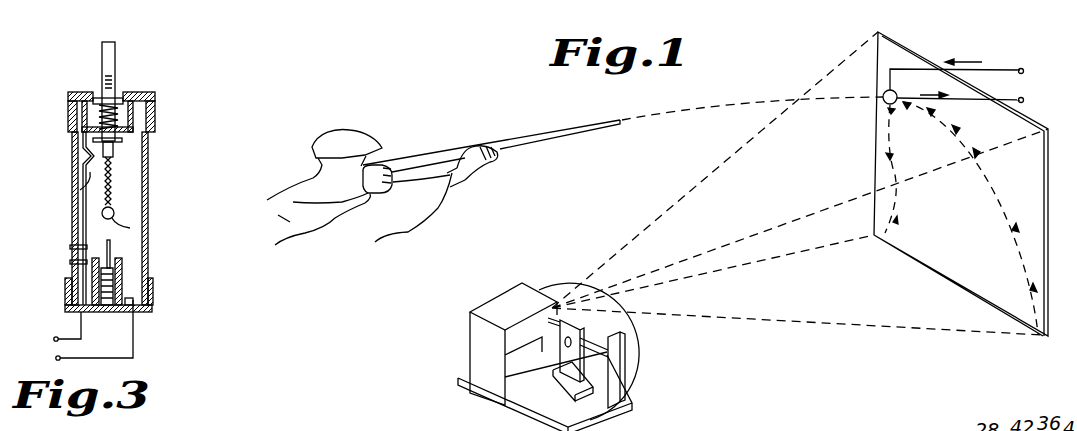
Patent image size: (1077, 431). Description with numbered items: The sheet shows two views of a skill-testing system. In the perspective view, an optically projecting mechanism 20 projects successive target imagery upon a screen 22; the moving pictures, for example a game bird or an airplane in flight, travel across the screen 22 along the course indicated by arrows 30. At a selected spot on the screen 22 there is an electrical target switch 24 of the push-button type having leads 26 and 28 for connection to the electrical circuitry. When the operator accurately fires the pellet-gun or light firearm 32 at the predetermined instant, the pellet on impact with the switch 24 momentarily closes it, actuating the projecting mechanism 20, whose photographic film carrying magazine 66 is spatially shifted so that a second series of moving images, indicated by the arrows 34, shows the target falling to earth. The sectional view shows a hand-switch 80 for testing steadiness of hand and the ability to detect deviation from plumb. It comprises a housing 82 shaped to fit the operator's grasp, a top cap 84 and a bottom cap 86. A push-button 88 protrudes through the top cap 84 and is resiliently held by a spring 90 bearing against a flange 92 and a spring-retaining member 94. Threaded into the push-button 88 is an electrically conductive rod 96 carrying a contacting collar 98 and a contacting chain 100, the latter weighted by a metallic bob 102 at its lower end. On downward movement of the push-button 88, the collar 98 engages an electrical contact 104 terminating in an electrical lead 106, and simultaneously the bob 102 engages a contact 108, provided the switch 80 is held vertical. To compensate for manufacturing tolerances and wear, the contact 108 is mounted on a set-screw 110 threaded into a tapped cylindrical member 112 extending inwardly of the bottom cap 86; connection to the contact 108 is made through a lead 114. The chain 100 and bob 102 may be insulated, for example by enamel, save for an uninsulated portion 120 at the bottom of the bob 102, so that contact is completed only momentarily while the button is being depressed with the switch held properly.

In FIG. 1, the optically projecting mechanism 20 is at (472, 335).
In FIG. 1, the screen 22 is at (940, 268).
In FIG. 1, the electrical target switch 24 is at (883, 103).
In FIG. 1, the lead 26 is at (1010, 100).
In FIG. 1, the lead 28 is at (1002, 70).
In FIG. 1, the arrows indicating course of first series of moving images 30 is at (940, 118).
In FIG. 1, the pellet-gun or light firearm 32 is at (448, 150).
In FIG. 1, the arrows indicating second series of moving images 34 is at (892, 125).
In FIG. 1, the photographic film carrying magazine 66 is at (640, 348).
In FIG. 3, the hand-switch 80 is at (52, 122).
In FIG. 3, the housing 82 is at (150, 207).
In FIG. 3, the top cap 84 is at (152, 109).
In FIG. 3, the bottom cap 86 is at (152, 299).
In FIG. 3, the push-button 88 is at (120, 67).
In FIG. 3, the spring 90 is at (105, 118).
In FIG. 3, the flange 92 is at (97, 93).
In FIG. 3, the spring-retaining member 94 is at (117, 139).
In FIG. 3, the electrically conductive rod 96 is at (115, 152).
In FIG. 3, the contacting collar 98 is at (80, 140).
In FIG. 3, the contacting chain 100 is at (110, 185).
In FIG. 3, the metallic bob 102 is at (118, 211).
In FIG. 3, the electrical contact 104 is at (80, 190).
In FIG. 3, the electrical lead 106 is at (80, 318).
In FIG. 3, the contact 108 is at (112, 248).
In FIG. 3, the set-screw 110 is at (111, 310).
In FIG. 3, the tapped cylindrical member 112 is at (125, 272).
In FIG. 3, the lead 114 is at (133, 337).
In FIG. 3, the uninsulated portion 120 is at (130, 228).